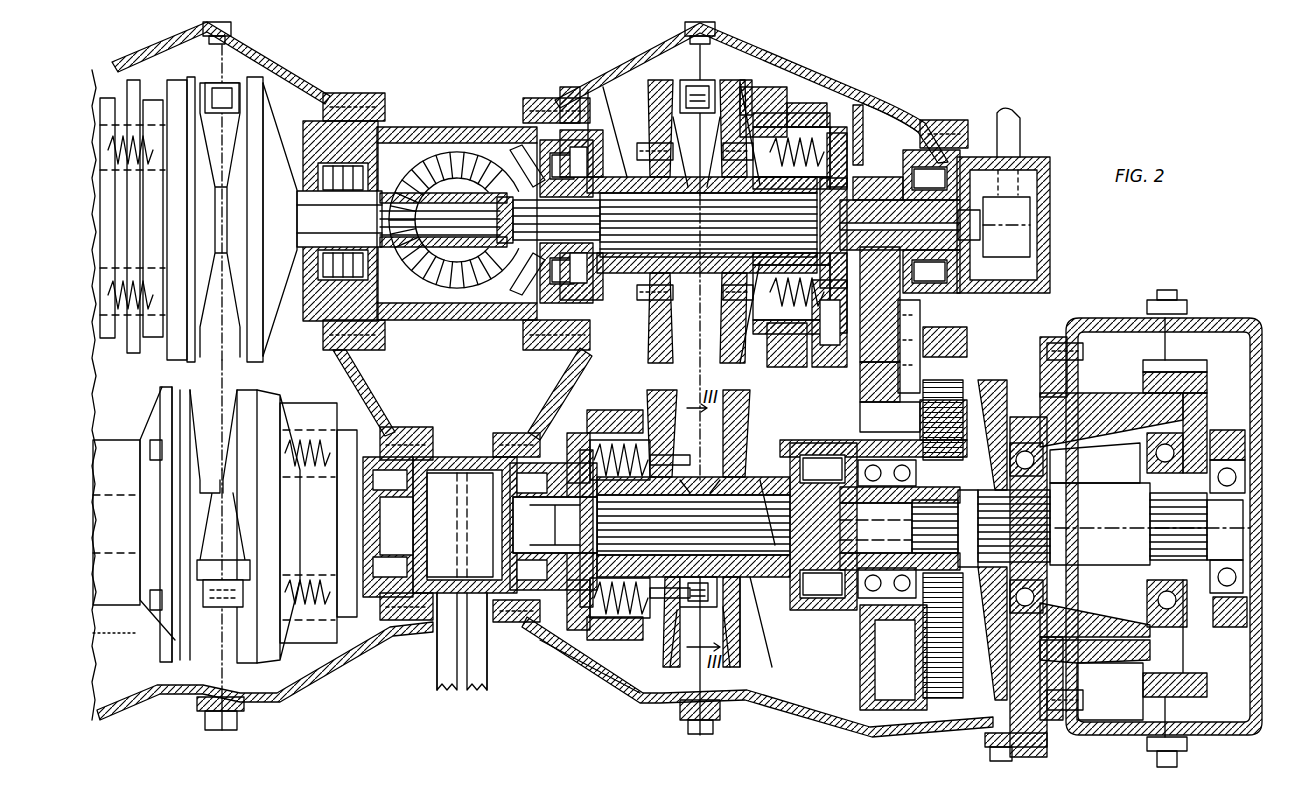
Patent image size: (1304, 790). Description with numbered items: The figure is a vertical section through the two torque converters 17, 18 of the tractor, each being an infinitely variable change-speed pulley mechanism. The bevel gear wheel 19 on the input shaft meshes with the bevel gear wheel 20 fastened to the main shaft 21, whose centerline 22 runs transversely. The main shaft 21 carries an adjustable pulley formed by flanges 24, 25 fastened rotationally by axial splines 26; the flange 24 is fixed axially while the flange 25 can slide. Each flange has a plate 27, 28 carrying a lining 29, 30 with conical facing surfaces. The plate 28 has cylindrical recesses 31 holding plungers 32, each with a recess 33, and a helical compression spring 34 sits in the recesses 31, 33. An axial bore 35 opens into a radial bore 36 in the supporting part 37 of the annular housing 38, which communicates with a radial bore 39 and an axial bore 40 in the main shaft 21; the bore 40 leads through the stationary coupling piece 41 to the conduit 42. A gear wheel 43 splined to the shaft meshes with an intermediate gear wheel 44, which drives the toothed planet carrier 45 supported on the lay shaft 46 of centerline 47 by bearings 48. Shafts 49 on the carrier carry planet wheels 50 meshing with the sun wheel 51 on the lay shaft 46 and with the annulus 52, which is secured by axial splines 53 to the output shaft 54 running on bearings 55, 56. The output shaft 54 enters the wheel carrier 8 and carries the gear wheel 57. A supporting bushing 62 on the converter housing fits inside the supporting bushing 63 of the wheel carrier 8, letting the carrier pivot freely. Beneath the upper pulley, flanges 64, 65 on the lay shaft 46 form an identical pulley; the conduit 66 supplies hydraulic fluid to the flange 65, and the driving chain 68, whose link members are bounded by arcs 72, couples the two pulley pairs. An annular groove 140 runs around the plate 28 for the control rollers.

The wheel carrier 8 is at (1238, 330).
The torque converter 17 is at (147, 53).
The torque converter 18 is at (613, 59).
The bevel gear wheel 19 is at (455, 150).
The bevel gear wheel 20 is at (525, 140).
The main shaft 21 is at (445, 272).
The centerline 22 is at (327, 230).
The flange 24 is at (290, 128).
The flange 25 is at (175, 81).
The axial splines 26 is at (645, 255).
The plate 27 is at (268, 322).
The plate 28 is at (150, 368).
The lining 29 is at (262, 80).
The lining 30 is at (205, 354).
The cylindrical recess 31 is at (768, 95).
The plunger 32 is at (312, 572).
The cylindrical recess 33 is at (795, 100).
The helical compression spring 34 is at (120, 146).
The axial bore 35 is at (860, 112).
The radial bore 36 is at (850, 150).
The supporting part 37 is at (900, 120).
The annular housing 38 is at (820, 105).
The radial bore 39 is at (817, 215).
The axial bore 40 is at (880, 195).
The coupling piece 41 is at (1010, 208).
The conduit 42 is at (1010, 125).
The gear wheel 43 is at (862, 180).
The intermediate gear wheel 44 is at (860, 375).
The planet carrier 45 is at (862, 405).
The lay shaft 46 is at (825, 542).
The centerline 47 is at (862, 540).
The bearings 48 is at (900, 503).
The shafts 49 is at (860, 440).
The planet wheel 50 is at (870, 445).
The sun wheel 51 is at (910, 555).
The annulus 52 is at (950, 700).
The axial splines 53 is at (1045, 514).
The output shaft 54 is at (1093, 575).
The bearing 55 is at (1044, 467).
The bearing 56 is at (1147, 470).
The gear wheel 57 is at (1205, 398).
The supporting bushing 62 is at (1072, 615).
The supporting bushing 63 is at (1093, 660).
The flange 64 is at (740, 665).
The flange 65 is at (659, 677).
The conduit 66 is at (487, 676).
The driving chain 68 is at (248, 376).
The arcs 72 is at (227, 88).
The annular groove 140 is at (770, 375).